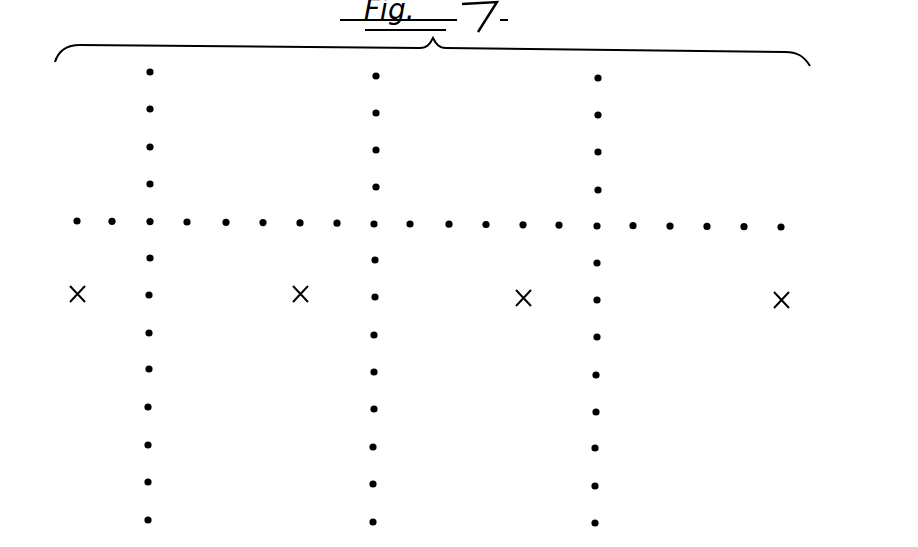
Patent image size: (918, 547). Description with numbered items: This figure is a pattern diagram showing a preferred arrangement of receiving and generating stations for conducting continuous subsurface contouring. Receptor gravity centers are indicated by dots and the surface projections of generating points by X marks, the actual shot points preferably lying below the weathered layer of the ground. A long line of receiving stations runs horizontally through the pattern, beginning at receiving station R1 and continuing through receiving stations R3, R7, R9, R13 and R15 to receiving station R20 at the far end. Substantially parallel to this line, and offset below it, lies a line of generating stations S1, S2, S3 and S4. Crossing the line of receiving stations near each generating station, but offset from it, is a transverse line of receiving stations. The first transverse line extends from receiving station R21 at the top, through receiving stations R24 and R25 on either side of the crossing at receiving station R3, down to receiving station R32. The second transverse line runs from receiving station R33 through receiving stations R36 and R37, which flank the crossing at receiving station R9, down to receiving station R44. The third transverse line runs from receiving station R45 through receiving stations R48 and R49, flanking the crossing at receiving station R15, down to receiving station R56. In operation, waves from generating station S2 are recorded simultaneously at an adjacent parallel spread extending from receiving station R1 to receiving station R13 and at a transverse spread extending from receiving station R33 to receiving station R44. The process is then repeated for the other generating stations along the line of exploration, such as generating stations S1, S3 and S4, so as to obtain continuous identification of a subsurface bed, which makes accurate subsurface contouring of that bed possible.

The receiving station R1 is at (82, 214).
The receiving station R3 is at (155, 214).
The receiving station R7 is at (305, 215).
The receiving station R9 is at (379, 216).
The receiving station R13 is at (531, 217).
The receiving station R15 is at (605, 218).
The receiving station R20 is at (789, 219).
The receiving station R21 is at (163, 75).
The receiving station R24 is at (163, 187).
The receiving station R25 is at (163, 262).
The receiving station R32 is at (162, 523).
The receiving station R33 is at (389, 78).
The receiving station R36 is at (389, 190).
The receiving station R37 is at (388, 264).
The receiving station R44 is at (387, 525).
The receiving station R45 is at (611, 80).
The receiving station R48 is at (611, 193).
The receiving station R49 is at (610, 267).
The receiving station R56 is at (608, 526).
The generating station S1 is at (75, 309).
The generating station S2 is at (298, 310).
The generating station S3 is at (521, 313).
The generating station S4 is at (779, 314).